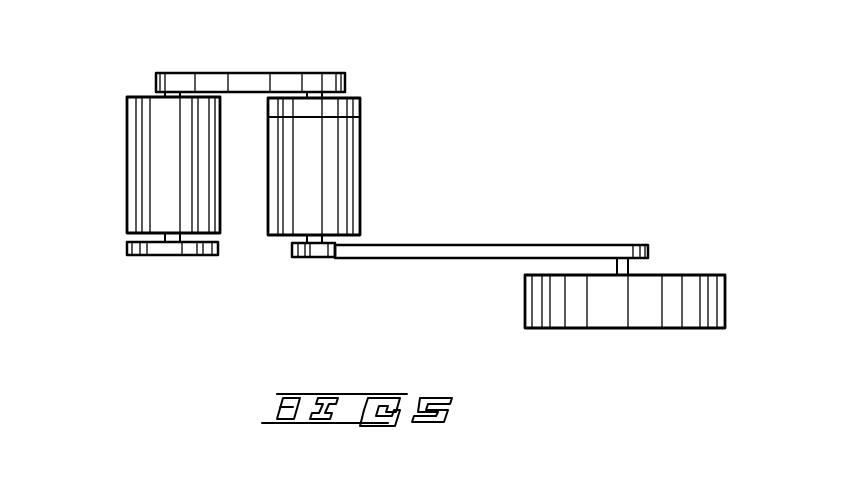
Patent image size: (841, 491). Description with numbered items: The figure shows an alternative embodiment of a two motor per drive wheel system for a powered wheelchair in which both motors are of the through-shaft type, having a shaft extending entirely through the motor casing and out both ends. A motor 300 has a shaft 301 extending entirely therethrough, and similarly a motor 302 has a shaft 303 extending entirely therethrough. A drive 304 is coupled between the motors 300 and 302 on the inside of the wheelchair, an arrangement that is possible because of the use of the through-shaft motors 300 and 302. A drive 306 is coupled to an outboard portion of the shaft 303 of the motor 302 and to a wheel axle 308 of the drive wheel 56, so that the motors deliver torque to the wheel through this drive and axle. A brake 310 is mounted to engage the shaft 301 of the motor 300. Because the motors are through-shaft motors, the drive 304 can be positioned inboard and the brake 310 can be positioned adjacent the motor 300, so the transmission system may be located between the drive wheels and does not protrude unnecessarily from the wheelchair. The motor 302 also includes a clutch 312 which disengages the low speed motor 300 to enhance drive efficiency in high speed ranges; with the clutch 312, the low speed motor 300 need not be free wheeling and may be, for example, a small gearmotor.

The motor 300 is at (130, 200).
The shaft 301 is at (172, 238).
The motor 302 is at (342, 150).
The shaft 303 is at (322, 242).
The drive 304 is at (243, 72).
The drive 306 is at (478, 245).
The wheel axle 308 is at (628, 268).
The brake 310 is at (168, 257).
The clutch 312 is at (350, 111).
The drive wheel 56 is at (648, 310).